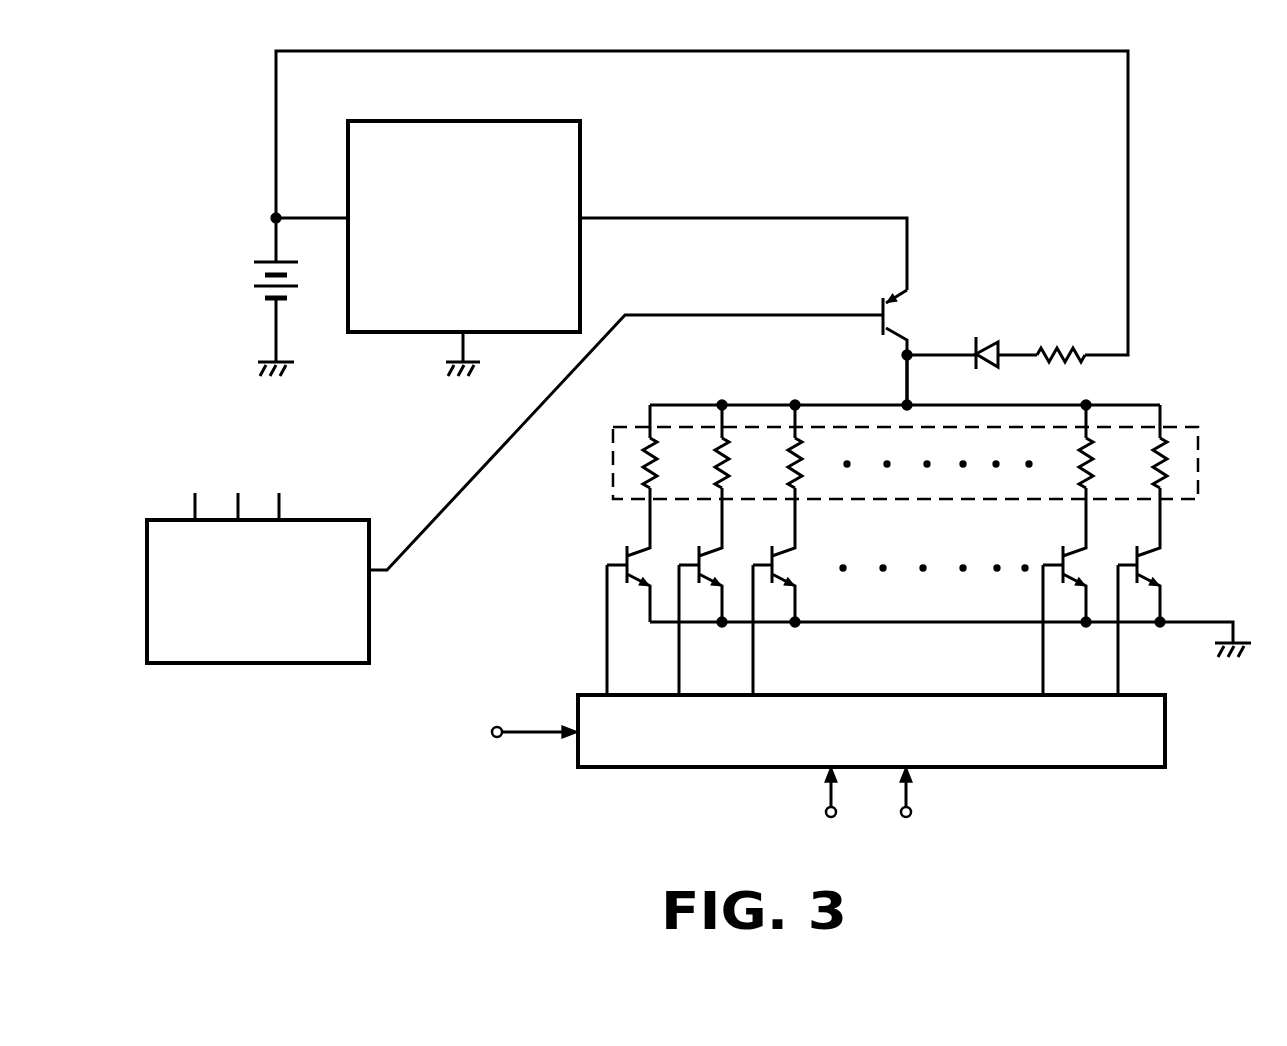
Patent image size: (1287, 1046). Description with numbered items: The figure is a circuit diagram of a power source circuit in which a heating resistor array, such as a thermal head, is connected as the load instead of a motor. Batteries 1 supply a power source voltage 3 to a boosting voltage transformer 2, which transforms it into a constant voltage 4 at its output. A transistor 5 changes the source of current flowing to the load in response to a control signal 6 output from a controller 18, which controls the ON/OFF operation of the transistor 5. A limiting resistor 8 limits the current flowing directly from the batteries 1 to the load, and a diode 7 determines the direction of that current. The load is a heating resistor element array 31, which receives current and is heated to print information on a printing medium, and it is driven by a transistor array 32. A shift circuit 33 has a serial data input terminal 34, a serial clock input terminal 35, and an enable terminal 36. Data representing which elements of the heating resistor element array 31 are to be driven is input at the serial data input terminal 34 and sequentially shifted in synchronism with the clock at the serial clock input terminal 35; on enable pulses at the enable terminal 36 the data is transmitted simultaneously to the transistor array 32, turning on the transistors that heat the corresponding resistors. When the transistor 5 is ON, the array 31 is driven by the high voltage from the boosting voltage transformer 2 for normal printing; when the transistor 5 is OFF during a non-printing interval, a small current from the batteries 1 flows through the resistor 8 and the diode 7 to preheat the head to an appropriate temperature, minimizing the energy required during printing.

The batteries 1 is at (256, 275).
The boosting voltage transformer 2 is at (463, 121).
The power source voltage 3 is at (346, 210).
The constant voltage 4 is at (584, 210).
The transistor 5 is at (888, 311).
The control signal 6 is at (796, 315).
The diode 7 is at (993, 341).
The limiting resistor 8 is at (1060, 348).
The controller 18 is at (305, 665).
The heating resistor element array 31 is at (640, 462).
The transistor array 32 is at (623, 553).
The shift circuit 33 is at (1165, 730).
The serial data input terminal 34 is at (492, 732).
The serial clock input terminal 35 is at (952, 816).
The enable terminal 36 is at (826, 812).